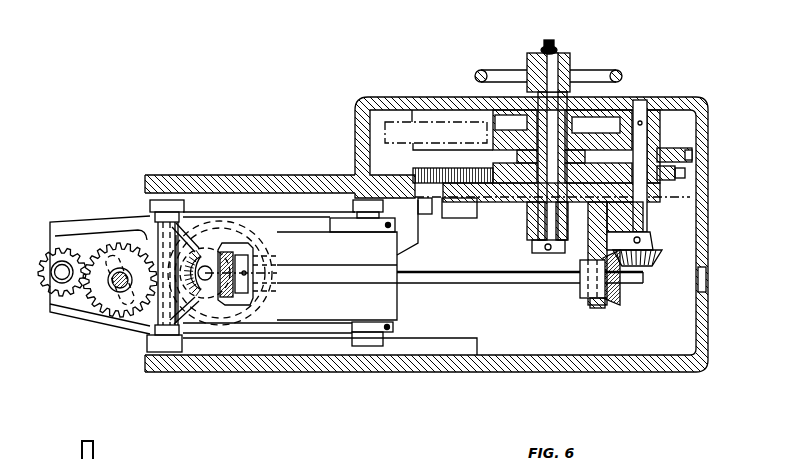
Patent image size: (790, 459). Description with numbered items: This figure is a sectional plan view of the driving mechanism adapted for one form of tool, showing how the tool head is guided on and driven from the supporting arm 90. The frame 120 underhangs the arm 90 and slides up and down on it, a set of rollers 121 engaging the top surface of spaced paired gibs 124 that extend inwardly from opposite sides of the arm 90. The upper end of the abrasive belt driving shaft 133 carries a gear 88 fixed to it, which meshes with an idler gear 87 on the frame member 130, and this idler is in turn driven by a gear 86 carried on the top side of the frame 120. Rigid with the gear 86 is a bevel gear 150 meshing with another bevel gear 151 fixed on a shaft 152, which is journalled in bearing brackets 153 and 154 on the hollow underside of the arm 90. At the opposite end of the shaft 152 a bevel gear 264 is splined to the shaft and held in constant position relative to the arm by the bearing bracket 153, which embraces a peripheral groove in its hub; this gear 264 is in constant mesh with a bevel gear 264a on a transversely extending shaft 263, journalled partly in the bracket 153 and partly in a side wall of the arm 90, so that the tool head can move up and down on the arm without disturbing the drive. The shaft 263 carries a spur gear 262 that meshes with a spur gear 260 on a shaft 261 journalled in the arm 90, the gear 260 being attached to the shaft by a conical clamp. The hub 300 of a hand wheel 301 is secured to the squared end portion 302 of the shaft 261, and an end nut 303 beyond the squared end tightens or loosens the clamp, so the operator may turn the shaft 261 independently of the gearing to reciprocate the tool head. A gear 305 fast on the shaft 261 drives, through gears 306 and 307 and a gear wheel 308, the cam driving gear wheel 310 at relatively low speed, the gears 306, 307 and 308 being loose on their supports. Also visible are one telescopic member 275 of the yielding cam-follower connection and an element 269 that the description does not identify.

The gear 86 is at (228, 322).
The idler gear 87 is at (120, 280).
The gear 88 is at (67, 252).
The supporting arm 90 is at (688, 112).
The frame 120 is at (390, 302).
The rollers 121 is at (168, 215).
The gibs 124 is at (295, 208).
The frame member 130 is at (100, 222).
The abrasive belt driving shaft 133 is at (62, 275).
The bevel gear 150 is at (143, 330).
The bevel gear 151 is at (228, 253).
The shaft 152 is at (485, 281).
The bearing bracket 153 is at (597, 305).
The bearing bracket 154 is at (268, 302).
The spur gear 260 is at (500, 112).
The shaft 261 is at (560, 83).
The spur gear 262 is at (640, 112).
The shaft 263 is at (650, 104).
The bevel gear 264 is at (622, 293).
The bevel gear 264a is at (661, 263).
The cover plate 269 is at (436, 132).
The telescopic member 275 is at (427, 214).
The hub 300 is at (535, 70).
The hand wheel 301 is at (490, 58).
The squared end portion 302 is at (556, 50).
The end nut 303 is at (570, 56).
The gear 305 is at (517, 157).
The gear 306 is at (692, 154).
The gear 307 is at (673, 173).
The gear wheel 308 is at (491, 166).
The cam driving gear wheel 310 is at (415, 175).